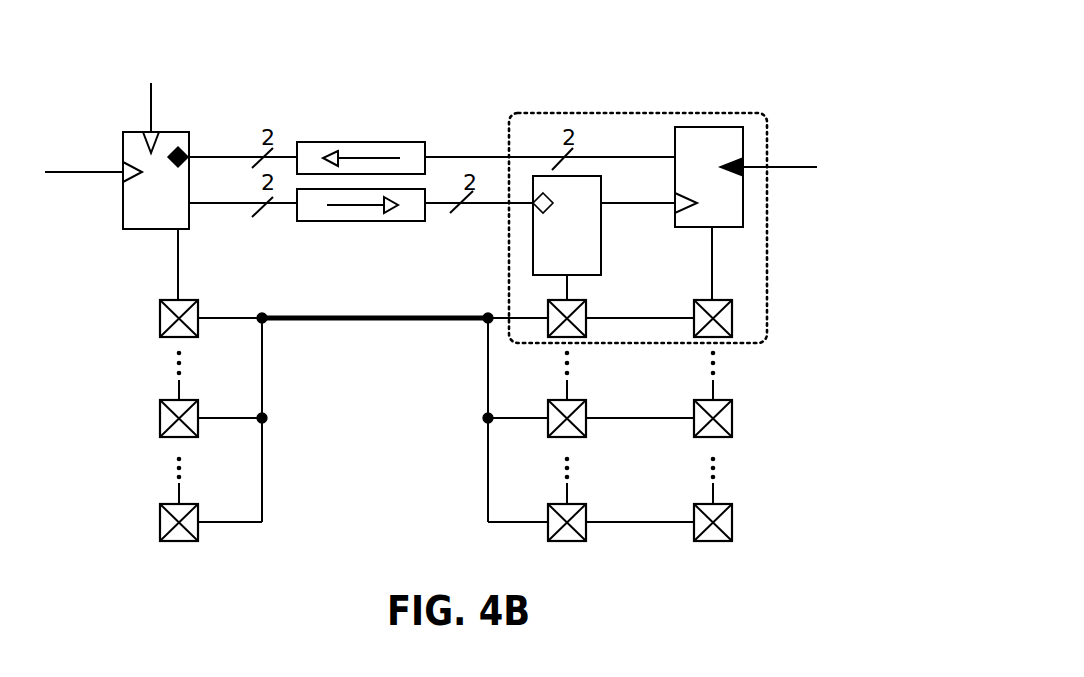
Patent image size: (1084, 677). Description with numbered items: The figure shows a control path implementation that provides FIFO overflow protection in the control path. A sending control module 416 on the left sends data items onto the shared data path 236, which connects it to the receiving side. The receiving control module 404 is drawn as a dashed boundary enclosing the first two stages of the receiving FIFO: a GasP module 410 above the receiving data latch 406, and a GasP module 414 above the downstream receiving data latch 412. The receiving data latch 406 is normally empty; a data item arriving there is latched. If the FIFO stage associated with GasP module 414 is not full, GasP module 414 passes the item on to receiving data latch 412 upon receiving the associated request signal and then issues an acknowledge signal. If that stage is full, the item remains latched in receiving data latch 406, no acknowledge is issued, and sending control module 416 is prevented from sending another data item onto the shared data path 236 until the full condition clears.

The sending control module 416 is at (168, 132).
The receiving control module 404 is at (510, 113).
The GasP module 414 is at (703, 127).
The GasP module 410 is at (532, 273).
The receiving data latch 406 is at (583, 300).
The receiving data latch 412 is at (730, 300).
The shared data path 236 is at (320, 323).